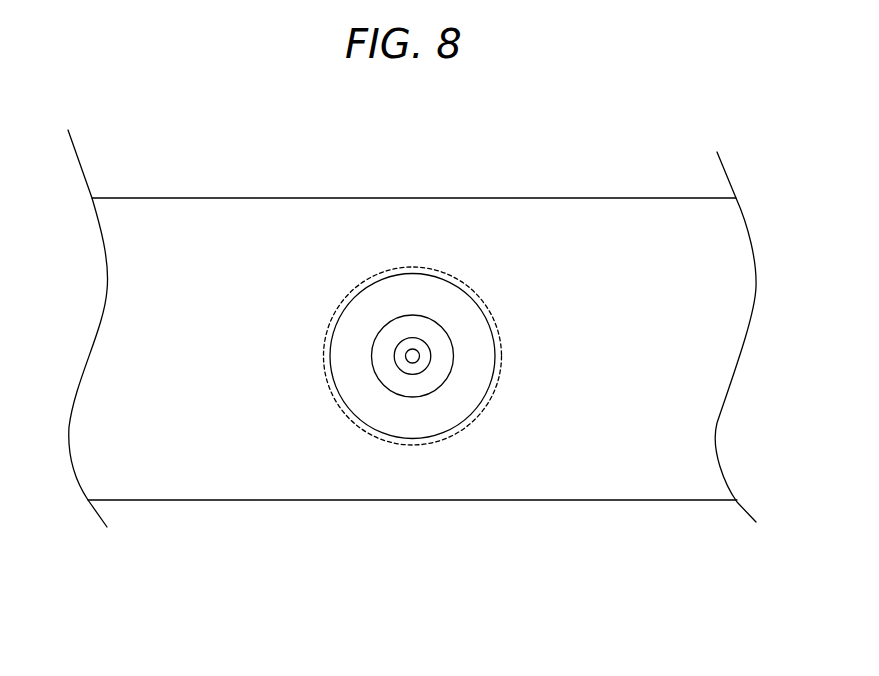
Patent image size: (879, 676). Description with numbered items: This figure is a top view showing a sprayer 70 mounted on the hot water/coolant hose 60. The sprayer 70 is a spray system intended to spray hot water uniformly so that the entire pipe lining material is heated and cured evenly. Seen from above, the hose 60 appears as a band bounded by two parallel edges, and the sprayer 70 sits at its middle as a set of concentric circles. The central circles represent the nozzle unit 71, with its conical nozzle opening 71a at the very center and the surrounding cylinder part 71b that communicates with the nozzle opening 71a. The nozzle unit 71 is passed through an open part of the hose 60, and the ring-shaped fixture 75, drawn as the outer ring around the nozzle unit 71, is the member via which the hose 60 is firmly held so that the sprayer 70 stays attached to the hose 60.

The hot water/coolant hose 60 is at (180, 245).
The sprayer 70 is at (432, 460).
The ring-shaped fixture 75 is at (467, 382).
The nozzle unit 71 is at (438, 370).
The nozzle opening 71a is at (413, 358).
The cylinder part 71b is at (420, 343).